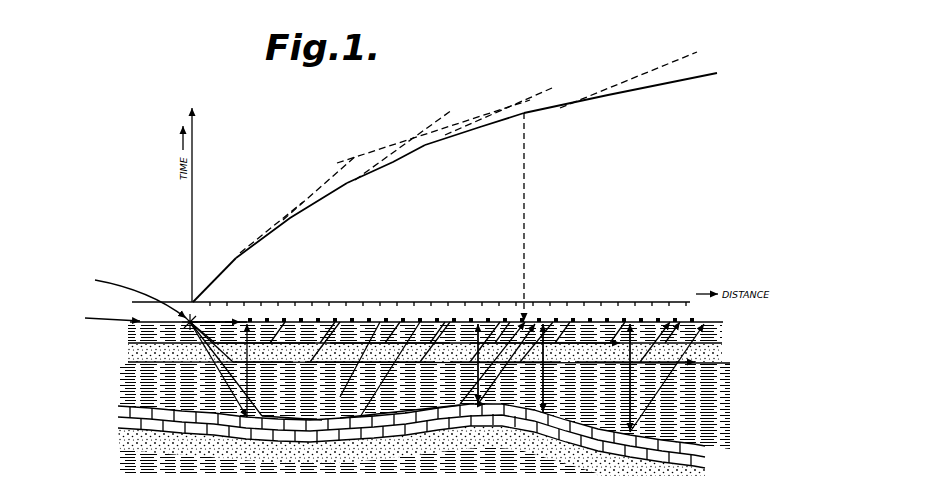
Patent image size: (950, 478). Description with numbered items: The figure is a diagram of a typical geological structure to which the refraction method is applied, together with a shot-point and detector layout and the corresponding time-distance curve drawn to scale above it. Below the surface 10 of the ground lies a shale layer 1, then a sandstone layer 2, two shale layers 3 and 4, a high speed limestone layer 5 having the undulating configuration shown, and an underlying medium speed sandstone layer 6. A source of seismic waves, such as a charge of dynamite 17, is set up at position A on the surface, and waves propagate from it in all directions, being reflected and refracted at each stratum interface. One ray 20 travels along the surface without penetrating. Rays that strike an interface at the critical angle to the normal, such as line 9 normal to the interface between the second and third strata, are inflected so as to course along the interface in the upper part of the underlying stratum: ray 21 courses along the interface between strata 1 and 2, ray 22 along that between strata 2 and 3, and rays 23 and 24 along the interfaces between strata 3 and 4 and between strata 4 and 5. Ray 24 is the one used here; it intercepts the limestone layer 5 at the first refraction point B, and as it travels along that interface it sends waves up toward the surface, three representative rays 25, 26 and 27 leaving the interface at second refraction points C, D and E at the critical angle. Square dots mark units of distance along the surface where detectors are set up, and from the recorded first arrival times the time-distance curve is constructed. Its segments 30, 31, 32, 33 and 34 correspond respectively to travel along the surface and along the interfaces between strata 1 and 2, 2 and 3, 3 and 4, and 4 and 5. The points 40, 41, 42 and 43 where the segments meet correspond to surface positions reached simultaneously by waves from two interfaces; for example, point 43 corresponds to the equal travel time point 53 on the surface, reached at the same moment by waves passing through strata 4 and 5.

The shale layer 1 is at (131, 333).
The sandstone layer 2 is at (125, 353).
The shale layer 3 is at (125, 378).
The shale layer 4 is at (125, 399).
The high speed limestone layer 5 is at (117, 416).
The medium speed sandstone layer 6 is at (128, 440).
The normal to the interface 9 is at (252, 317).
The surface of the ground 10 is at (146, 319).
The charge of dynamite 17 is at (187, 316).
The ray traveling along the surface 20 is at (216, 320).
The ray coursing along interface between strata 1 and 2 21 is at (226, 348).
The ray coursing along interface between strata 2 and 3 22 is at (290, 361).
The ray coursing along interface between strata 3 and 4 23 is at (342, 396).
The ray coursing along interface between strata 4 and 5 24 is at (445, 358).
The upgoing ray 25 is at (557, 397).
The upgoing ray 26 is at (552, 407).
The upgoing ray 27 is at (626, 431).
The time-distance curve segment 30 is at (217, 280).
The time-distance curve segment 31 is at (292, 218).
The time-distance curve segment 32 is at (393, 162).
The time-distance curve segment 33 is at (478, 128).
The time-distance curve segment 34 is at (608, 95).
The segment meeting point 40 is at (237, 257).
The segment meeting point 41 is at (347, 182).
The segment meeting point 42 is at (425, 144).
The segment meeting point 43 is at (524, 112).
The equal travel time point 53 is at (492, 388).